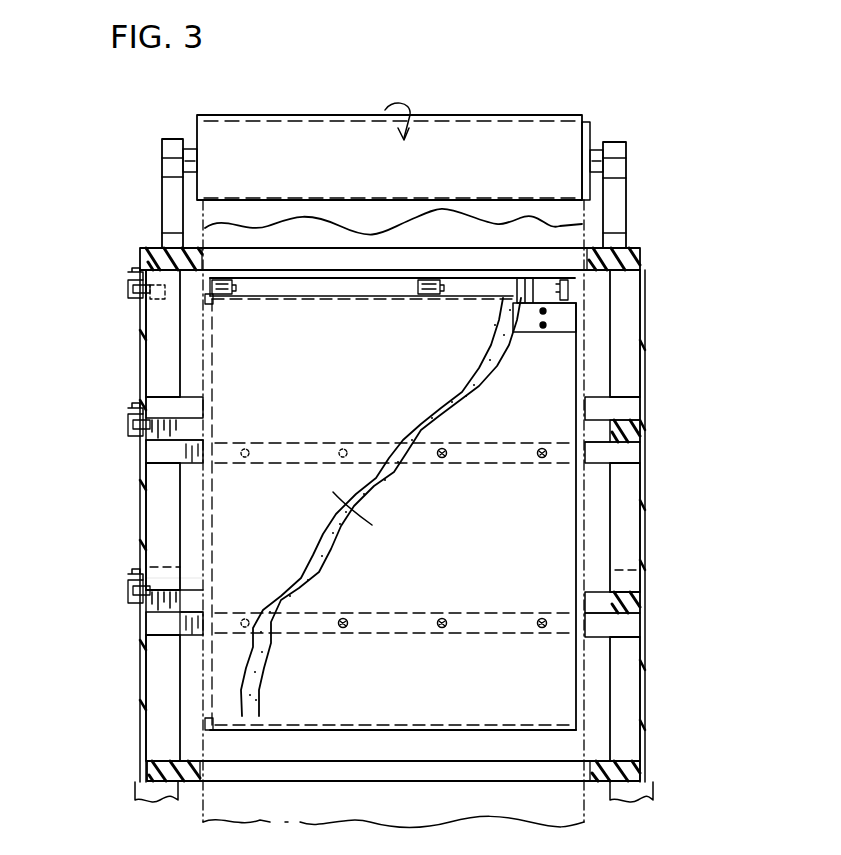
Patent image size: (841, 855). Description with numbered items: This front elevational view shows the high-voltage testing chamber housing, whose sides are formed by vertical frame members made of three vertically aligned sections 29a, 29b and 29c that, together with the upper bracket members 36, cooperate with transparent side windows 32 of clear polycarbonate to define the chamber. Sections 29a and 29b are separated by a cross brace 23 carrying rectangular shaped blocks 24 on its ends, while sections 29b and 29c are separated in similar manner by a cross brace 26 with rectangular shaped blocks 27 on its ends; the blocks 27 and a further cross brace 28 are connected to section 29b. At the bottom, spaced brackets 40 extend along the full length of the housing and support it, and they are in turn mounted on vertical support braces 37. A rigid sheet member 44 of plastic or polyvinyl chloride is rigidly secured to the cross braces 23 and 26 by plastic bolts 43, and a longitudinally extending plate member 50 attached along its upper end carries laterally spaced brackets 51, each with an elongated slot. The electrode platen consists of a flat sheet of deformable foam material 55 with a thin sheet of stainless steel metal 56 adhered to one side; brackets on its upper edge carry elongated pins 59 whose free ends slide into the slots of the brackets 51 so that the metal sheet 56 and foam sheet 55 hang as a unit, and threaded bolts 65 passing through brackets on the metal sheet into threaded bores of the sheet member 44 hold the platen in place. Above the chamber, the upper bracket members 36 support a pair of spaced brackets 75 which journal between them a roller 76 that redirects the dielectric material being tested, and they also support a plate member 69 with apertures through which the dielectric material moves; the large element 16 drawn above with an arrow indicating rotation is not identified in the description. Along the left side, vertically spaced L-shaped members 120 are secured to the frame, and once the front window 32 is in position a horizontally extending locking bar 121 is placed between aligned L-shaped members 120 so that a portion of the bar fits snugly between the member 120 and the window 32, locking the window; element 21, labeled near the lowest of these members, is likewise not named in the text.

The roller 16 is at (467, 112).
The roller 76 is at (588, 130).
The spaced brackets 75 is at (168, 202).
The upper bracket members 36 is at (160, 250).
The transparent side windows 32 is at (142, 495).
The vertical frame member section 29a is at (165, 345).
The vertical frame member section 29b is at (160, 520).
The vertical frame member section 29c is at (165, 700).
The rectangular shaped blocks 24 is at (175, 415).
The cross brace 23 is at (170, 452).
The cross brace 28 is at (175, 572).
The rectangular shaped blocks 27 is at (165, 617).
The cross brace 26 is at (190, 628).
The lower fastener assembly 21 is at (128, 585).
The L-shaped members 120 is at (128, 293).
The locking bar 121 is at (128, 285).
The threaded bolts 65 is at (205, 298).
The plate member 50 is at (345, 280).
The brackets 51 is at (440, 285).
The elongated pin 59 is at (422, 298).
The plate member 69 is at (470, 258).
The rigid sheet member 44 is at (568, 358).
The plastic bolts 43 is at (542, 458).
The deformable foam material 55 is at (380, 477).
The sheet of metal 56 is at (372, 525).
The spaced brackets 40 is at (155, 768).
The vertical support braces 37 is at (152, 790).